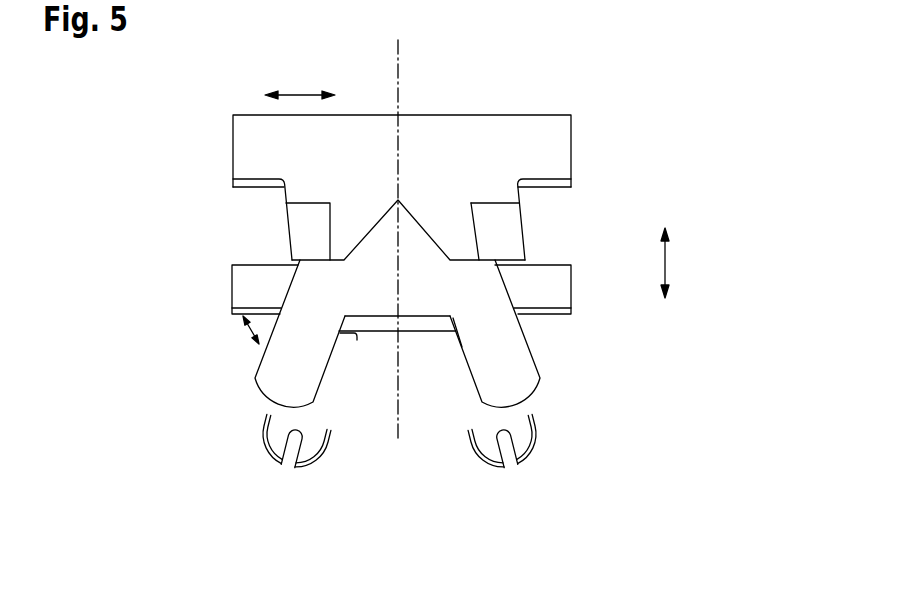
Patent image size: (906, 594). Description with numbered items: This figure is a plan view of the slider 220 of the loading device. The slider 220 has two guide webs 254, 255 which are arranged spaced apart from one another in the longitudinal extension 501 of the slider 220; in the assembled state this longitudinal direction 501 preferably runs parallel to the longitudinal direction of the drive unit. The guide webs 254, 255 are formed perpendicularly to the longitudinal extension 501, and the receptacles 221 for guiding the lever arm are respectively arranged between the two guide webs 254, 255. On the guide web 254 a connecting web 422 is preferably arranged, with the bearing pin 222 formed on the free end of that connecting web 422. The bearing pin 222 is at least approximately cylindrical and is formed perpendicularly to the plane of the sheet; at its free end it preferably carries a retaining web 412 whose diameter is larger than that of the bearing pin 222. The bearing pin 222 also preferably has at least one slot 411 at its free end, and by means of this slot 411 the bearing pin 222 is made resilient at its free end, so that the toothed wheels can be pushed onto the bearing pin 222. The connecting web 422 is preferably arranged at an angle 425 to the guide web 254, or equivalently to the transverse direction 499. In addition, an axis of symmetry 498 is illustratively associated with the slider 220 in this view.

The slider 220 is at (607, 100).
The receptacles 221 is at (300, 232).
The bearing pin 222 is at (272, 378).
The guide web 254 is at (240, 293).
The guide web 255 is at (247, 148).
The slot 411 is at (290, 467).
The retaining web 412 is at (262, 432).
The connecting web 422 is at (305, 364).
The angle 425 is at (248, 331).
The axis of symmetry 498 is at (398, 56).
The transverse direction 499 is at (300, 94).
The longitudinal extension 501 is at (666, 266).